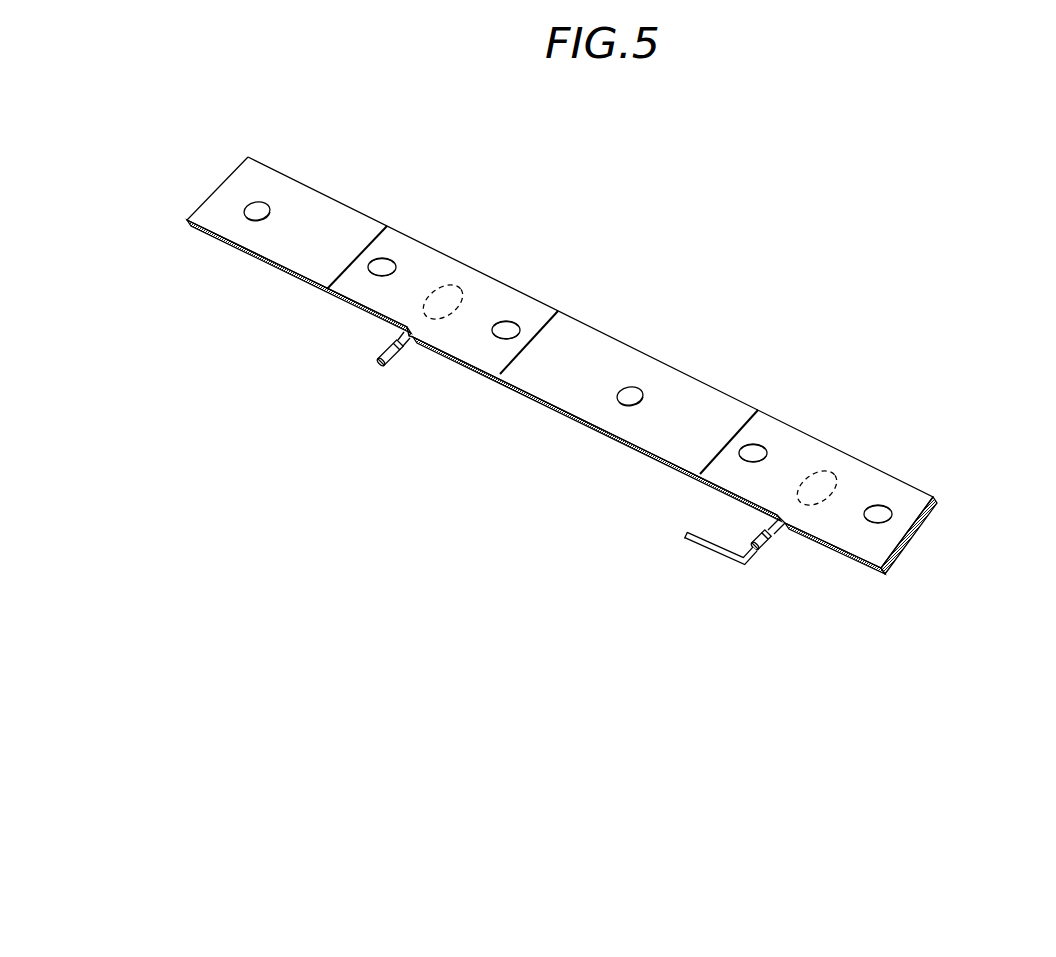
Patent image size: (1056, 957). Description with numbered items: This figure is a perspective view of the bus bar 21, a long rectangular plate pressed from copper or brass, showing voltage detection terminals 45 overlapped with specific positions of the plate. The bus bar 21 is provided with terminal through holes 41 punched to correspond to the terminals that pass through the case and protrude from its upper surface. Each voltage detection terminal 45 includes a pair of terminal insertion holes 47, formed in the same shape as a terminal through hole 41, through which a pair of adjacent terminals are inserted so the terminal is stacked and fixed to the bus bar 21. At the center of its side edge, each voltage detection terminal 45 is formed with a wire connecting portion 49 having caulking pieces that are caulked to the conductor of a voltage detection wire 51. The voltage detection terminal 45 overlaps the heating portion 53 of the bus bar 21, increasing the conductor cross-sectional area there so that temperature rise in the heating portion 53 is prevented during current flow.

The bus bar 21 is at (599, 352).
The terminal through hole 41 is at (254, 214).
The voltage detection terminal 45 is at (419, 240).
The terminal insertion hole 47 is at (383, 263).
The wire connecting portion 49 is at (396, 360).
The voltage detection wire 51 is at (716, 554).
The heating portion 53 is at (447, 290).